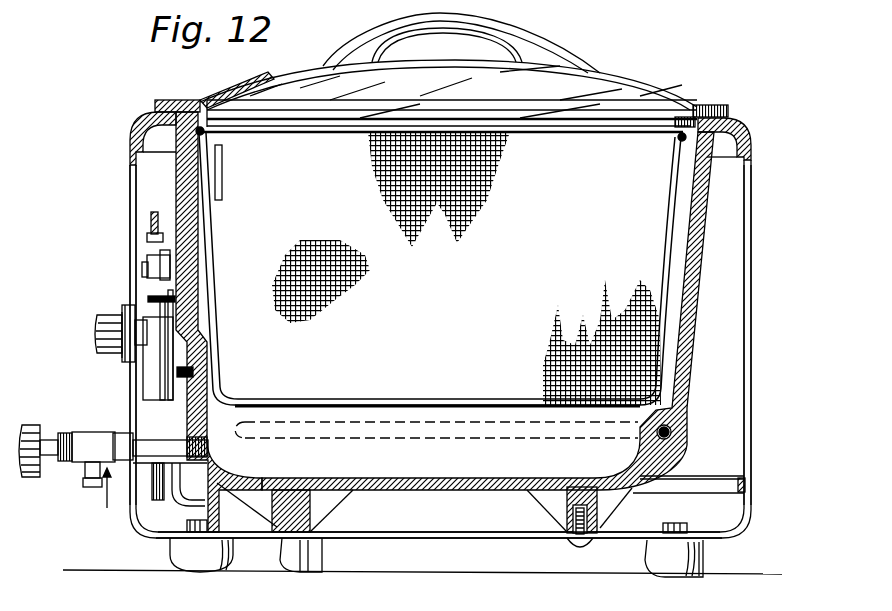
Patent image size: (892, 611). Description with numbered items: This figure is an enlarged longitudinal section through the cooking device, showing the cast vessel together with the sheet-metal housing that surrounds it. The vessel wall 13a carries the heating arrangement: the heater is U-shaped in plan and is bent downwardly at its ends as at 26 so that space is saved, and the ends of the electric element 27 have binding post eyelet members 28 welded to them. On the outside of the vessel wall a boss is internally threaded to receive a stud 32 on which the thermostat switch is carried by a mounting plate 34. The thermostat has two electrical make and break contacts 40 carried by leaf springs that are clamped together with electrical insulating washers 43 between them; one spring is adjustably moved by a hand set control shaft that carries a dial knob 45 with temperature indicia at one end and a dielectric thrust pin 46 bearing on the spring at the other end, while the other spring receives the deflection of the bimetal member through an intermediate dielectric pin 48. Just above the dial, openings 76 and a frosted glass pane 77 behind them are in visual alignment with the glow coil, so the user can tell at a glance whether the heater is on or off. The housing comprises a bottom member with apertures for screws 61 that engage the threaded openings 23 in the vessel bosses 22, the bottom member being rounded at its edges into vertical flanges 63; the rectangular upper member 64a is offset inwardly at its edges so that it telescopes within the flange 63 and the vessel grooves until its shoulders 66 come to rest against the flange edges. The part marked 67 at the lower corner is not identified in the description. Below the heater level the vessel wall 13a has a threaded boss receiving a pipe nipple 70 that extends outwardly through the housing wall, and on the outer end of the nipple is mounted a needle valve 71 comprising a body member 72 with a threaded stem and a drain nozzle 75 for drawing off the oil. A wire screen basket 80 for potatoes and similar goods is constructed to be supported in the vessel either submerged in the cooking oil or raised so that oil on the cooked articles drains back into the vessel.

The vessel wall 13a is at (197, 222).
The vessel bosses 22 is at (567, 503).
The threaded openings 23 is at (600, 527).
The downwardly bent heater ends 26 is at (314, 390).
The electric element 27 is at (233, 540).
The binding post eyelet members 28 is at (163, 533).
The stud 32 is at (185, 370).
The mounting plate 34 is at (167, 280).
The electrical make and break contacts 40 is at (157, 317).
The electrical insulating washers 43 is at (147, 382).
The dial knob 45 is at (97, 327).
The dielectric thrust pin 46 is at (100, 347).
The intermediate dielectric pin 48 is at (157, 297).
The screws 61 is at (567, 543).
The vertical flanges 63 is at (750, 507).
The upper housing member 64a is at (752, 320).
The shoulders 66 is at (743, 480).
The roller foot 67 is at (700, 550).
The pipe nipple 70 is at (143, 443).
The needle valve 71 is at (50, 401).
The body member 72 is at (80, 465).
The drain nozzle 75 is at (90, 493).
The openings 76 is at (130, 253).
The frosted glass pane 77 is at (130, 262).
The wire screen basket 80 is at (380, 395).